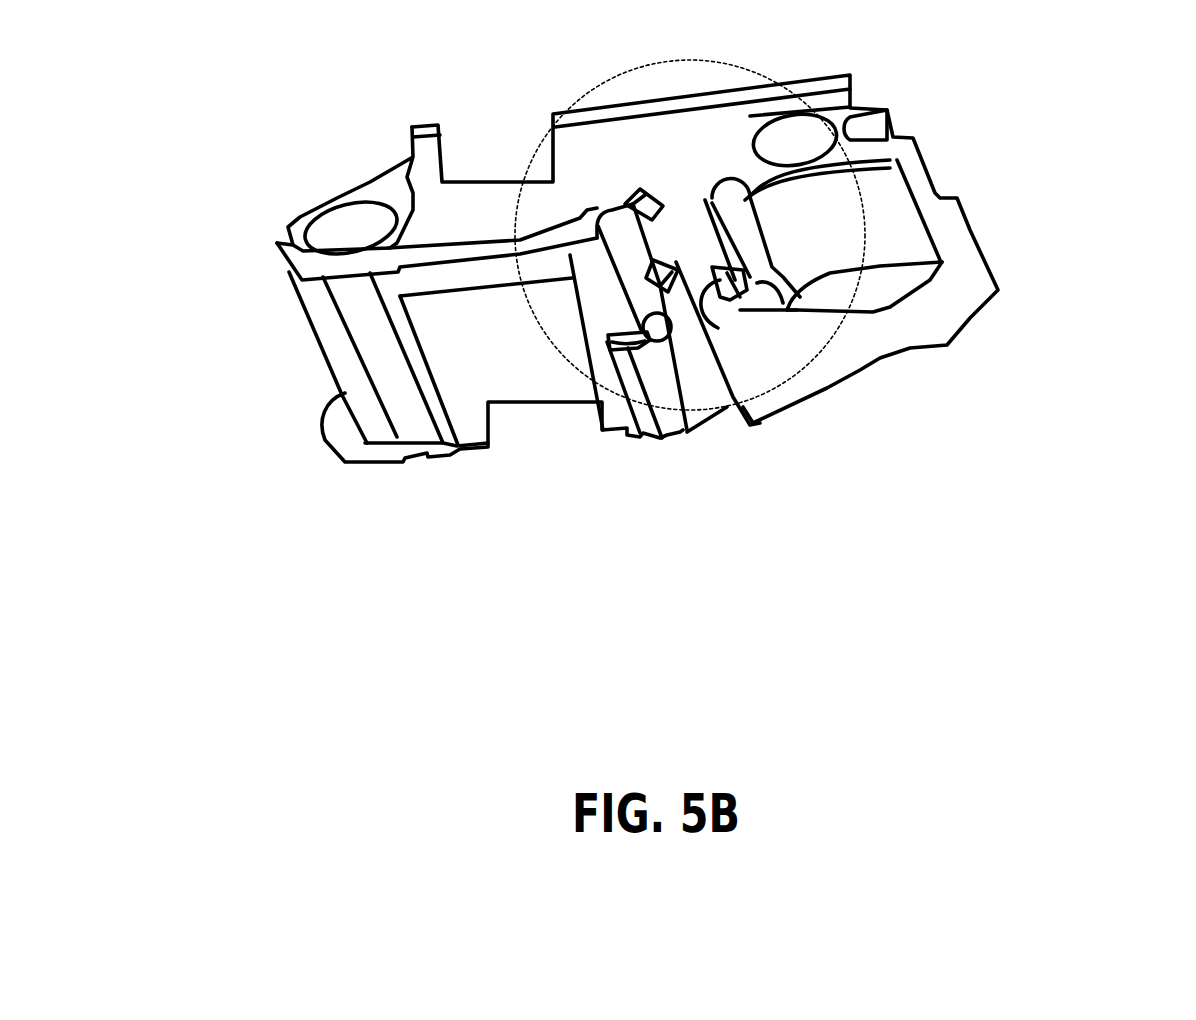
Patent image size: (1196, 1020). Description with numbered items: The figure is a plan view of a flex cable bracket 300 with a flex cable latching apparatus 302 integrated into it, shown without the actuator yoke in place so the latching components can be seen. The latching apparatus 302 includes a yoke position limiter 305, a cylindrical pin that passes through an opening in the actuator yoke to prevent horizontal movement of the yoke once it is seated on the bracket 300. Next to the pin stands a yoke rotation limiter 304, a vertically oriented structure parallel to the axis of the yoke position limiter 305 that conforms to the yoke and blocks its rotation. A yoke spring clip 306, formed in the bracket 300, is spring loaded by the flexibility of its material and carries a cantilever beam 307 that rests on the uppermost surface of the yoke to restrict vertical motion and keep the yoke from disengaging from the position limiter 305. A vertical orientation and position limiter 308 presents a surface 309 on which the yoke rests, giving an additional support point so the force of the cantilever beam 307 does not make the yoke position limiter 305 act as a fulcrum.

The flex cable bracket 300 is at (972, 318).
The flex cable latching apparatus 302 is at (833, 195).
The yoke rotation limiter 304 is at (737, 213).
The yoke position limiter 305 is at (742, 292).
The yoke spring clip 306 is at (630, 205).
The cantilever beam 307 is at (668, 262).
The vertical orientation and position limiter 308 is at (645, 387).
The surface 309 is at (643, 336).